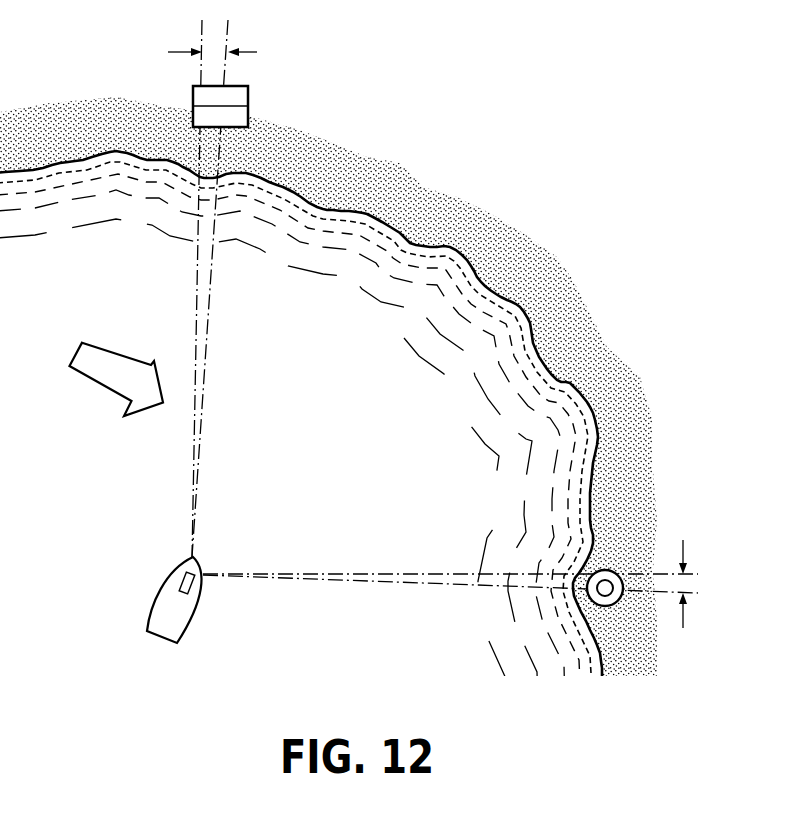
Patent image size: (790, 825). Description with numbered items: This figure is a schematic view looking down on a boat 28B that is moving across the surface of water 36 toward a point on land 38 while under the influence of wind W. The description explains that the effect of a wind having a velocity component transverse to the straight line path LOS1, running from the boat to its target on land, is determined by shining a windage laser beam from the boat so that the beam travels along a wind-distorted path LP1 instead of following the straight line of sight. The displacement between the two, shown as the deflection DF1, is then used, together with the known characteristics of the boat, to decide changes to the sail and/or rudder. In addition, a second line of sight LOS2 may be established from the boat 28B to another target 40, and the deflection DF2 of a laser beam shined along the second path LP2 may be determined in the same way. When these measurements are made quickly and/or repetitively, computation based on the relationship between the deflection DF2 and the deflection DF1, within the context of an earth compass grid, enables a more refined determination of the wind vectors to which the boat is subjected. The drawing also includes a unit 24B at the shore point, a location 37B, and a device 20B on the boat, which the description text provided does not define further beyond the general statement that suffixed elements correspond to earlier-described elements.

The land 38 is at (540, 196).
The water 36 is at (375, 474).
The shore-based transmitter/beacon 24B is at (248, 101).
The beacon location point 37B is at (200, 128).
The receiver unit on vessel 20B is at (183, 578).
The boat 28B is at (173, 620).
The another target 40 is at (607, 606).
The deflection DF1 is at (241, 53).
The deflection DF2 is at (688, 594).
The wind-distorted path LP1 is at (197, 298).
The path LP2 is at (413, 572).
The straight line path LOS1 is at (210, 302).
The line of sight LOS2 is at (410, 590).
The wind W is at (100, 385).